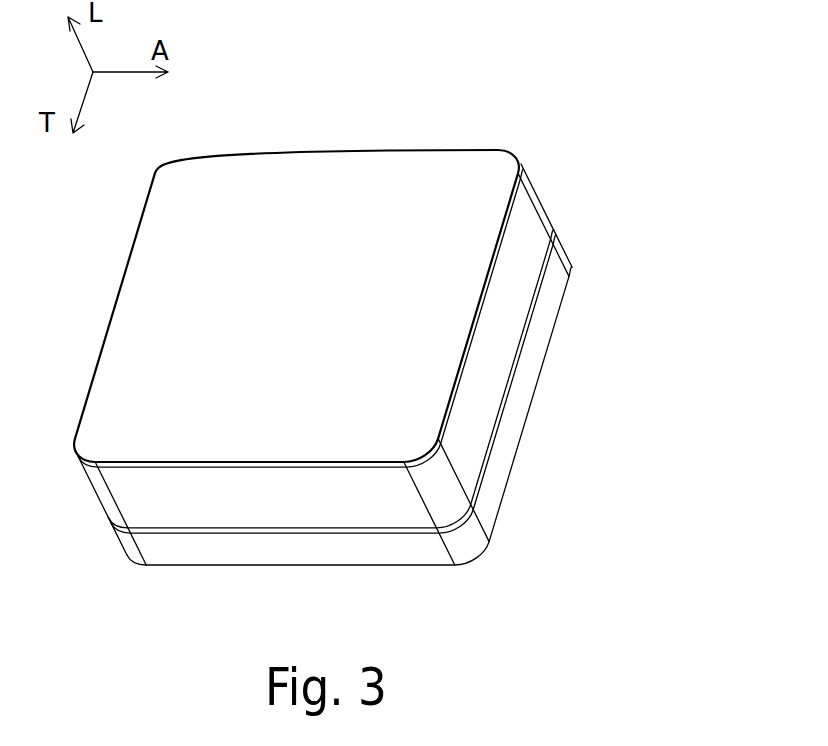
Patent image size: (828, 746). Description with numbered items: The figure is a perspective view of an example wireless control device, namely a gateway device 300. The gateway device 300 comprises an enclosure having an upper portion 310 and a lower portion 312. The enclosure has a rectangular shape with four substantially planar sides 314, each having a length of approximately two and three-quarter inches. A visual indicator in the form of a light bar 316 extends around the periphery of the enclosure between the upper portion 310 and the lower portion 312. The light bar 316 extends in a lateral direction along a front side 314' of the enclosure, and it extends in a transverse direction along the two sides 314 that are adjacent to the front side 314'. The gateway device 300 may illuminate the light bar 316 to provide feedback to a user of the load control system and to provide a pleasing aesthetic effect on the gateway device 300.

The gateway device 300 is at (551, 129).
The upper portion 310 is at (233, 192).
The lower portion 312 is at (217, 555).
The planar sides 314 is at (371, 393).
The front side 314' is at (300, 341).
The light bar 316 is at (517, 375).